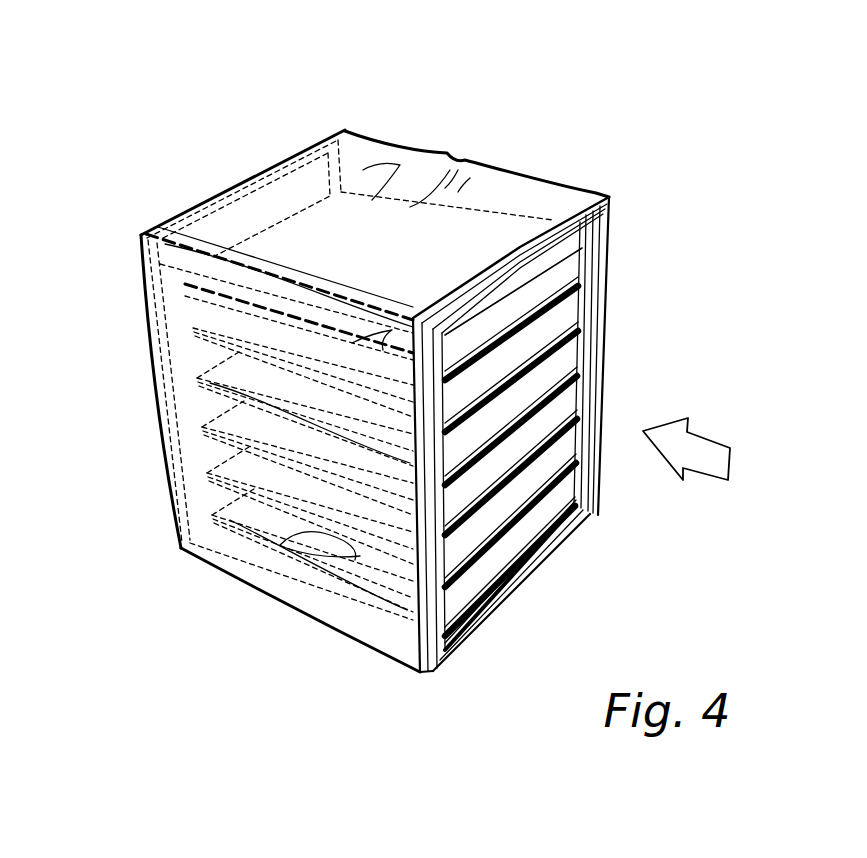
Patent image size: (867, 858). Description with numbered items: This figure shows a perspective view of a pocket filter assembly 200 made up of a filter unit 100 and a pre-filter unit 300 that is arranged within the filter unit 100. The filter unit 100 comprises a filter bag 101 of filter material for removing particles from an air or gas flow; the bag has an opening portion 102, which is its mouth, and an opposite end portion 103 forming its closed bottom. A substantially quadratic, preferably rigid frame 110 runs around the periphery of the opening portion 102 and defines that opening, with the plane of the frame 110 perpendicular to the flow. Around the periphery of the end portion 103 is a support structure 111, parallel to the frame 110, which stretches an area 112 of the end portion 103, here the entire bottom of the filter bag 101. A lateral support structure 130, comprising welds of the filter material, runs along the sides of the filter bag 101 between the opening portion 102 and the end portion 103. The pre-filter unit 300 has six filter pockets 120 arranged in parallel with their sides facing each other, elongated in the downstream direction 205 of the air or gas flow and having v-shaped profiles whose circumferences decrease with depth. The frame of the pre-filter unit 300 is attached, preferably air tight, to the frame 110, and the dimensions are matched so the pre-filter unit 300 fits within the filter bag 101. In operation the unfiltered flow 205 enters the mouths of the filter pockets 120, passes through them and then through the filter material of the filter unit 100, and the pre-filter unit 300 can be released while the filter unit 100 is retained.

The filter unit 100 is at (399, 372).
The filter bag 101 is at (245, 572).
The opening portion 102 is at (575, 252).
The end portion 103 is at (300, 177).
The frame 110 is at (413, 663).
The support structure 111 is at (157, 223).
The area 112 is at (263, 193).
The filter pockets 120 is at (535, 387).
The lateral support structure 130 is at (236, 262).
The pocket filter assembly 200 is at (669, 72).
The downstream direction of the air or gas flow 205 is at (705, 447).
The pre-filter unit 300 is at (490, 458).